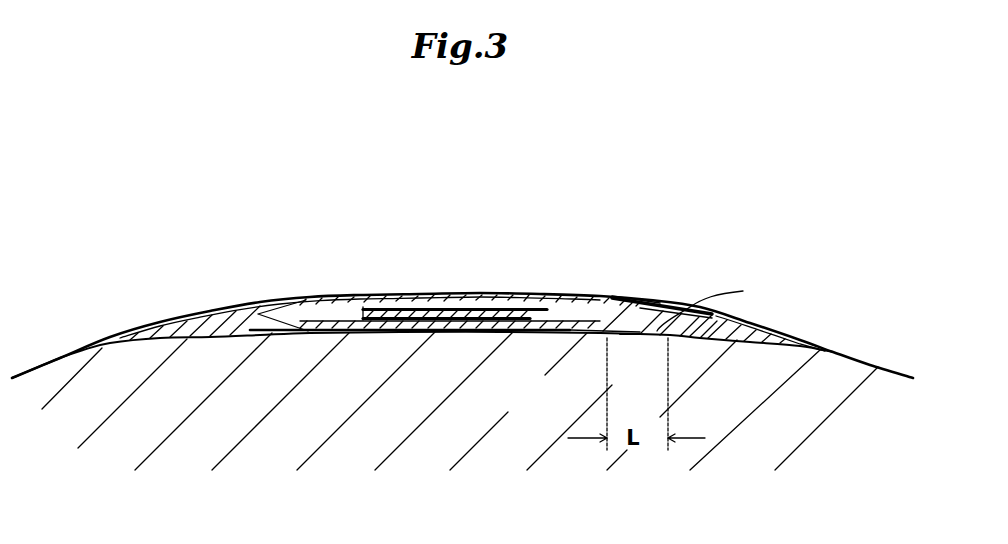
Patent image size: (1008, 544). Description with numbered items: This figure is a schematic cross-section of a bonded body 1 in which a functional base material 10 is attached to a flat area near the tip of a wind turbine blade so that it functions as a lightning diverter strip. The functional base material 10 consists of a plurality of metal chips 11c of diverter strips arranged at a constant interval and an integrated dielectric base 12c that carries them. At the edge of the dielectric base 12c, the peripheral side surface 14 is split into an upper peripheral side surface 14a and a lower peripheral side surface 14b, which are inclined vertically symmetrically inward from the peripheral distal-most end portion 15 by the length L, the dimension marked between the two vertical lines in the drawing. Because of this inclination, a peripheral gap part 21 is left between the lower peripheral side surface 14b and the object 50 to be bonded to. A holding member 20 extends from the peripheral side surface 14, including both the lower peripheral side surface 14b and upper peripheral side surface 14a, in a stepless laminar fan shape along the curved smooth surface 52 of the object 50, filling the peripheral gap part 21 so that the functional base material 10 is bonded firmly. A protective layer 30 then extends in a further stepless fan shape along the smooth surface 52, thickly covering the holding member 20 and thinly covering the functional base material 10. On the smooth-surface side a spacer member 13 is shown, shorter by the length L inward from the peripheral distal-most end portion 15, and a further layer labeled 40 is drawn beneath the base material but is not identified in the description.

The bonded body 1 is at (783, 178).
The functional base material 10 is at (750, 206).
The metal chips 11c is at (474, 299).
The dielectric base 12c is at (557, 302).
The spacer member 13 is at (600, 322).
The peripheral side surface 14 is at (742, 246).
The upper peripheral side surface 14a is at (652, 303).
The lower peripheral side surface 14b is at (703, 307).
The peripheral distal-most end portion 15 is at (717, 305).
The holding member 20 is at (712, 334).
The peripheral gap part 21 is at (637, 334).
The protective layer 30 is at (793, 338).
The bonding layer 40 is at (517, 327).
The object to be bonded to 50 is at (257, 387).
The smooth surface 52 is at (913, 378).